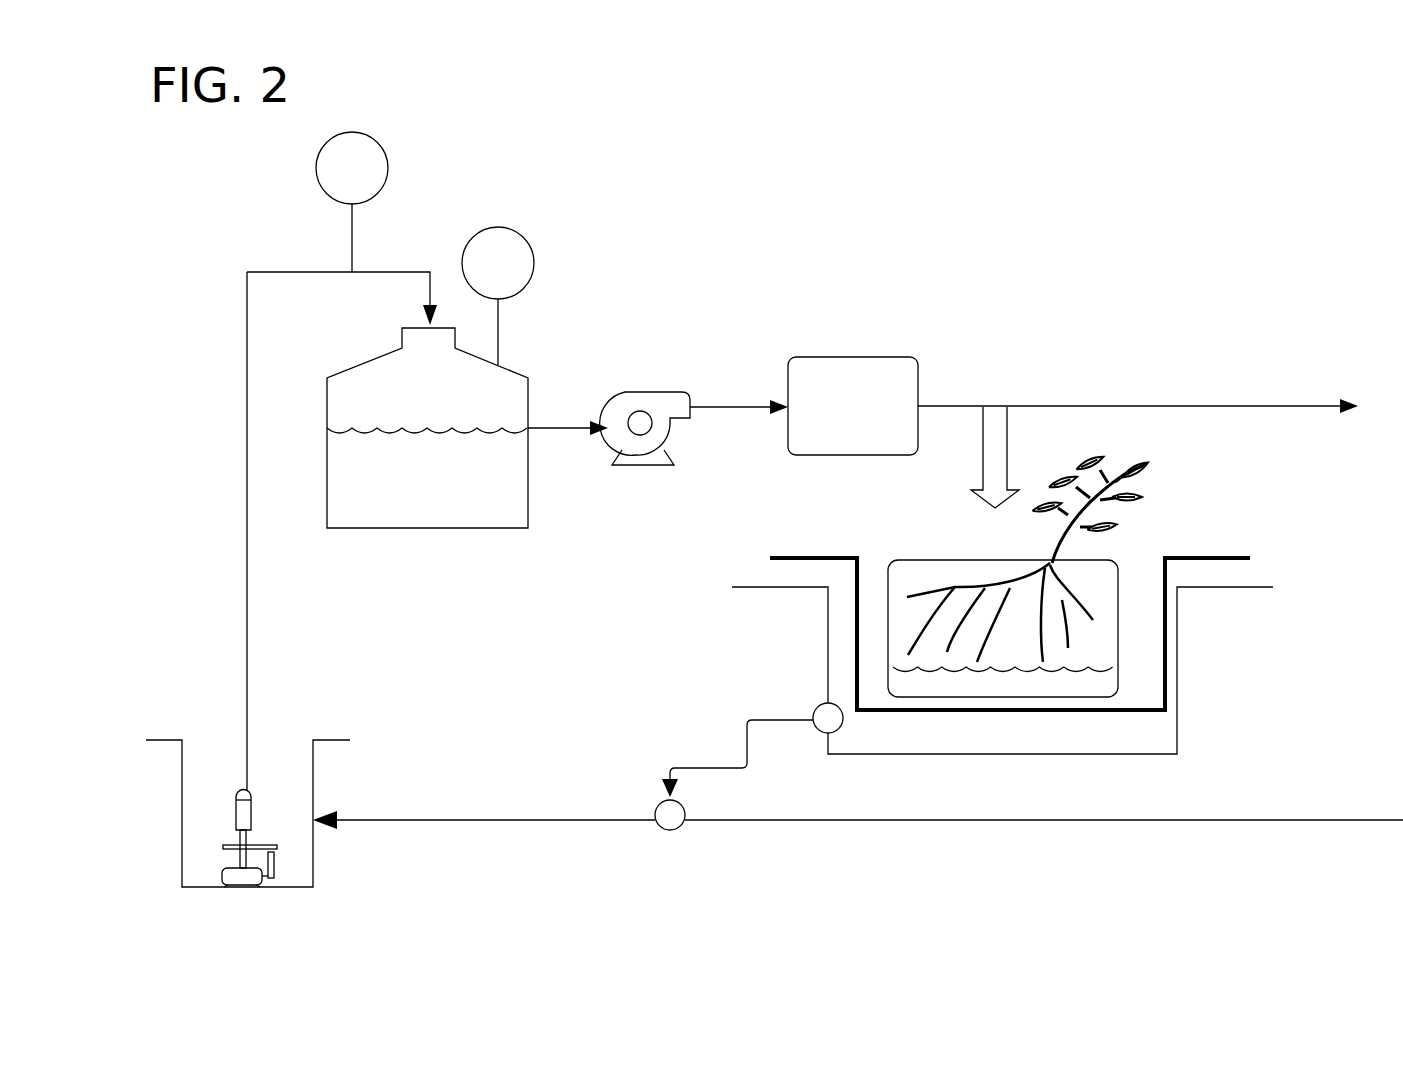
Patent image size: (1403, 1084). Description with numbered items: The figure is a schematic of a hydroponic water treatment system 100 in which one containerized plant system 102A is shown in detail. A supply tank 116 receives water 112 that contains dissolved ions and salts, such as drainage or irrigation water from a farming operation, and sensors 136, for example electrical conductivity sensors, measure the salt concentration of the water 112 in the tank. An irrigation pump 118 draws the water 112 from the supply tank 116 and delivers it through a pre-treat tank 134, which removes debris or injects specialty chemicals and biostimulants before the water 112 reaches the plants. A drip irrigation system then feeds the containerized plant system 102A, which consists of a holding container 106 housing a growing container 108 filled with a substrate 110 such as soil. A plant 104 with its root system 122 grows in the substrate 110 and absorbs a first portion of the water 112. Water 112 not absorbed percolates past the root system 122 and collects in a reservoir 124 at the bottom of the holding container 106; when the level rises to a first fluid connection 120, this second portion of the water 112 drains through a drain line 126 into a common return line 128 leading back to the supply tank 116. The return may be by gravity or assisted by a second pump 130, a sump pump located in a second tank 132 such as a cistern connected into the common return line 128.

The hydroponic water treatment system 100 is at (755, 210).
The sensor 136 is at (374, 183).
The supply tank 116 is at (445, 528).
The water 112 is at (449, 495).
The irrigation pump 118 is at (640, 392).
The pre-treat tank 134 is at (850, 357).
The plant 104 is at (1093, 510).
The growing container 108 is at (1197, 558).
The substrate 110 is at (958, 558).
The root system 122 is at (927, 588).
The first containerized plant system 102A is at (812, 644).
The holding container 106 is at (1177, 742).
The first fluid connection 120 is at (818, 710).
The drain line 126 is at (713, 768).
The reservoir 124 is at (942, 742).
The common return line 128 is at (247, 623).
The second pump 130 is at (235, 813).
The second tank 132 is at (282, 887).